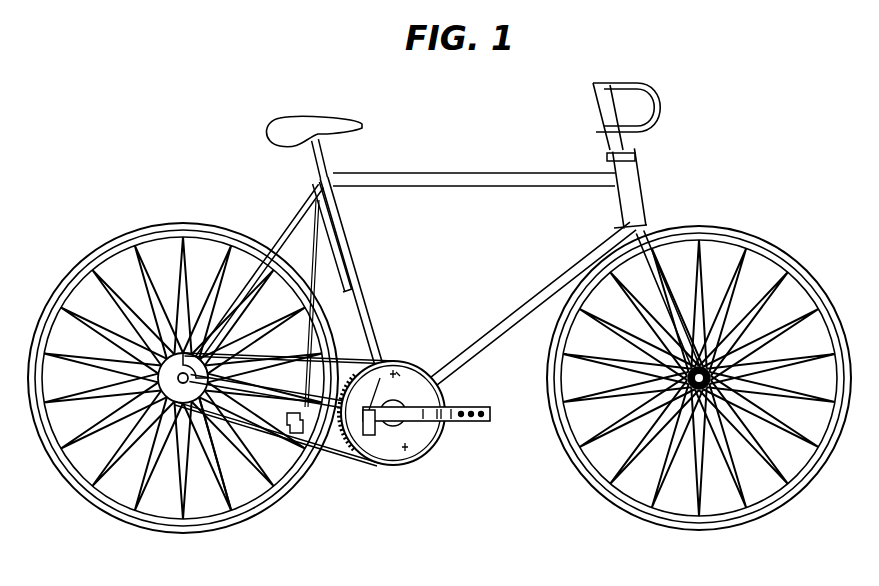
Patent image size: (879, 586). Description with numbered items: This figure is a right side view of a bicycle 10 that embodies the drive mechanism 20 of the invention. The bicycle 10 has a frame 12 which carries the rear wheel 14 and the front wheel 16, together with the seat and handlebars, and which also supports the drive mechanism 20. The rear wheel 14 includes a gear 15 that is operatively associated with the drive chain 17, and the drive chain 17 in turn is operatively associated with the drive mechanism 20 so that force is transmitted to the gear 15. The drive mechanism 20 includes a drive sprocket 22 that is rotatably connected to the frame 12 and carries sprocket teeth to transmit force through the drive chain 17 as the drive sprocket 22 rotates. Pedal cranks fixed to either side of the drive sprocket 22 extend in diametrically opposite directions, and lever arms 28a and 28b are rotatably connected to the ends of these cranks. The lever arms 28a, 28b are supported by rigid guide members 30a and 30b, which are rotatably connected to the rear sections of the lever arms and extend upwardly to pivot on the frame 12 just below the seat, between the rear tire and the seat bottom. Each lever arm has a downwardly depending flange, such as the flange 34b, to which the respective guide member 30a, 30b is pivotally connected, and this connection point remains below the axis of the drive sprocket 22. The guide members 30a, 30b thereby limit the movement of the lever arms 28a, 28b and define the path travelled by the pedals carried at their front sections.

The bicycle 10 is at (723, 163).
The frame 12 is at (437, 172).
The rear wheel 14 is at (127, 229).
The gear 15 is at (222, 475).
The front wheel 16 is at (788, 250).
The drive chain 17 is at (298, 440).
The drive mechanism 20 is at (426, 474).
The drive sprocket 22 is at (420, 437).
The lever arm 28a is at (336, 442).
The lever arm 28b is at (417, 363).
The guide member 30a is at (317, 237).
The guide member 30b is at (362, 280).
The flange 34b is at (373, 436).